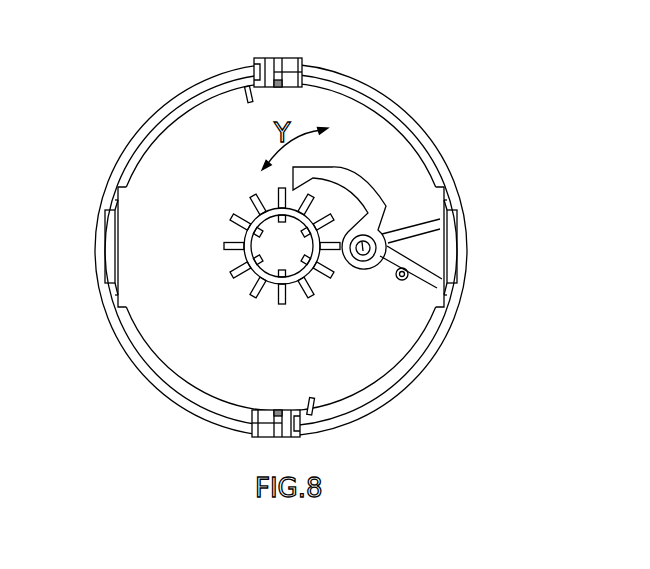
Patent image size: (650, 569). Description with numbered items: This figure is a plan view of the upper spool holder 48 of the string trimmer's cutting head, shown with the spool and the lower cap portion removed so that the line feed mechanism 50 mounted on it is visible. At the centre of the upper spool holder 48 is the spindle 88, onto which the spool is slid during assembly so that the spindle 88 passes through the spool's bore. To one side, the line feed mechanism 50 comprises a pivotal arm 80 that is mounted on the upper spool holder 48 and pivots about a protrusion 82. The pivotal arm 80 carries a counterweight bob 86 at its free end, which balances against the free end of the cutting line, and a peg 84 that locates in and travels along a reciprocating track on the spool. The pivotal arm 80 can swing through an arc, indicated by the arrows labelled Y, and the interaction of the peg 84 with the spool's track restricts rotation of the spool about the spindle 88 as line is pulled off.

The upper spool holder 48 is at (174, 98).
The line feed mechanism 50 is at (409, 194).
The pivotal arm 80 is at (380, 211).
The protrusion 82 is at (365, 252).
The peg 84 is at (409, 277).
The counterweight bob 86 is at (317, 165).
The spindle 88 is at (250, 218).